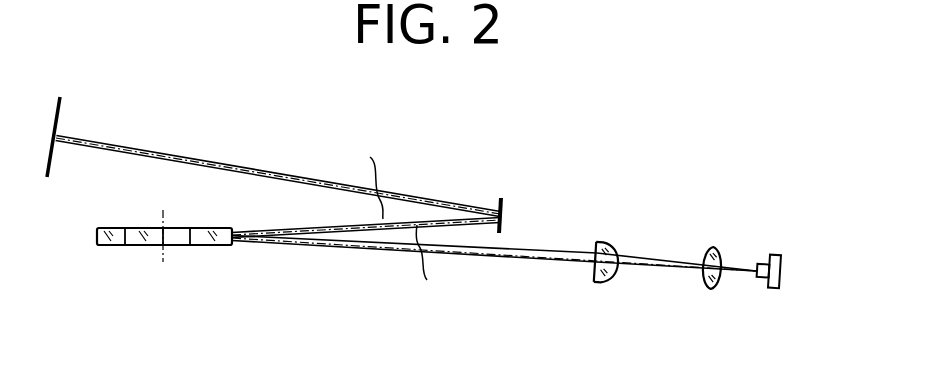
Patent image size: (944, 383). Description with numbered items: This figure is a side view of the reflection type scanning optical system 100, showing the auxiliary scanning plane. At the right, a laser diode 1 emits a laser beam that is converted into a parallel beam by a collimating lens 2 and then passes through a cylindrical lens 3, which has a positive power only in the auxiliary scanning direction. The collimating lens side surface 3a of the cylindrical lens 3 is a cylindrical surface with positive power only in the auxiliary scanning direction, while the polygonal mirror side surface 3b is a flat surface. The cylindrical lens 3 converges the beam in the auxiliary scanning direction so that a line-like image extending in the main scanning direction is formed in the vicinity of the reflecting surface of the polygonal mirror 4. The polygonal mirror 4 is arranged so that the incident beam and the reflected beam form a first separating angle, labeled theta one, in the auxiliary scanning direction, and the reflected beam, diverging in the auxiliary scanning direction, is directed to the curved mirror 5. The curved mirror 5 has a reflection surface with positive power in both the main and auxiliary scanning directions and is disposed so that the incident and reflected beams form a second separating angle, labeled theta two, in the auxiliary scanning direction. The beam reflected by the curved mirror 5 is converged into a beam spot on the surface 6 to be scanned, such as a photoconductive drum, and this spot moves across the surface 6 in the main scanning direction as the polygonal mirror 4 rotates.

The scanning optical system 100 is at (594, 105).
The laser diode 1 is at (772, 290).
The collimating lens 2 is at (712, 290).
The cylindrical lens 3 is at (609, 261).
The collimating lens side surface 3a is at (613, 246).
The polygonal mirror side surface 3b is at (594, 246).
The polygonal mirror 4 is at (200, 240).
The curved mirror 5 is at (503, 197).
The surface to be scanned 6 is at (50, 160).